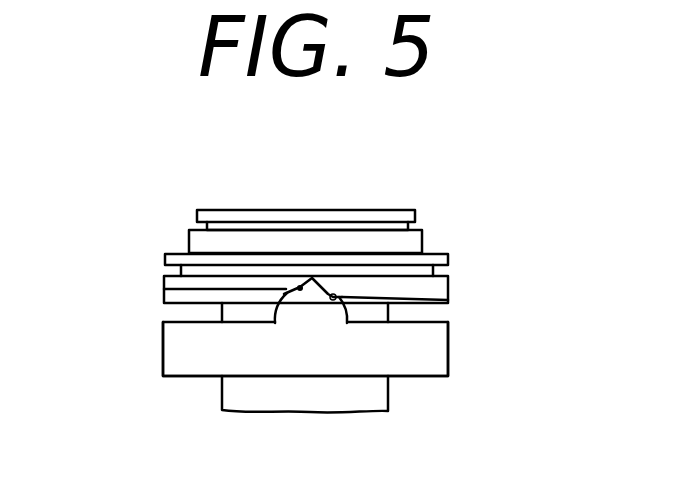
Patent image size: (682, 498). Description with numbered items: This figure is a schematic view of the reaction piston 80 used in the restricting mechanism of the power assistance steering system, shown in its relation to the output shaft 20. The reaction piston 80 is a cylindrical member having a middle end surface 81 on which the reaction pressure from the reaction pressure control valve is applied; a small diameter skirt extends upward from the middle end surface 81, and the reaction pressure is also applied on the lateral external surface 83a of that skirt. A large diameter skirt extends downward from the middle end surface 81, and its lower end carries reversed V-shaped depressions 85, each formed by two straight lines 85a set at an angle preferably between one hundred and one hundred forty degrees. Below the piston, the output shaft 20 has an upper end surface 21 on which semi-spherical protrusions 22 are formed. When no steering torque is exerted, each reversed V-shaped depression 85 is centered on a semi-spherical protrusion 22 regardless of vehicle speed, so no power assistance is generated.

The reaction piston 80 is at (445, 202).
The lateral external surface of the small diameter skirt 83a is at (188, 241).
The middle end surface 81 is at (188, 253).
The reversed V-shaped depression 85 is at (165, 291).
The straight line 85a is at (341, 293).
The upper end surface 21 is at (425, 322).
The output shaft 20 is at (453, 357).
The semi-spherical protrusion 22 is at (322, 332).